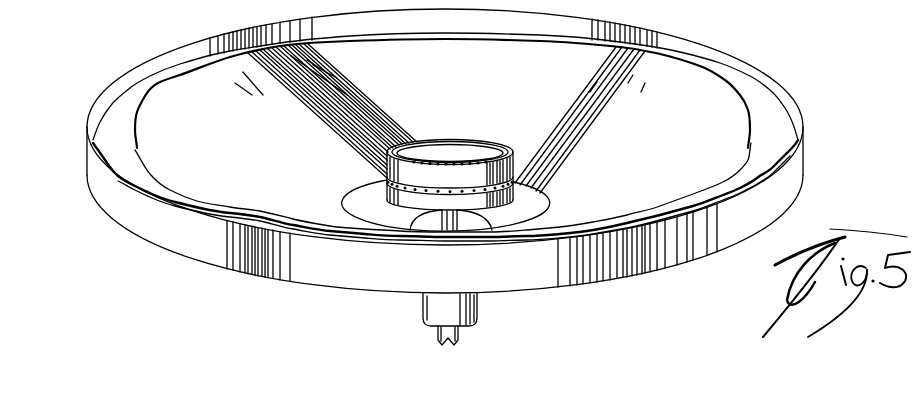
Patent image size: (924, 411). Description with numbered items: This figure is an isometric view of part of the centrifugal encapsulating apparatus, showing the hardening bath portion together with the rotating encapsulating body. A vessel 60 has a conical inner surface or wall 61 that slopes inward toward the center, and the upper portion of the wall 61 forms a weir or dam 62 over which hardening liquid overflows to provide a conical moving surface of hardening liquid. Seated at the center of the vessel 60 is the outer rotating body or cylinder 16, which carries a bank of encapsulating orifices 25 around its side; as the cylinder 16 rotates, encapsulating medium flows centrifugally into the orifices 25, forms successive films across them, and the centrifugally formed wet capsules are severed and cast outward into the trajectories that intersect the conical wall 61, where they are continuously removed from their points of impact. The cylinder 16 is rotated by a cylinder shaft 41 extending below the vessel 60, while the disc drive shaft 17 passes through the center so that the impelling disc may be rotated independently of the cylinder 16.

The vessel 60 is at (797, 86).
The conical inner surface or wall 61 is at (274, 171).
The weir or dam 62 is at (167, 187).
The cylinder 16 is at (476, 139).
The encapsulating orifices 25 is at (486, 188).
The disc drive shaft 17 is at (437, 224).
The cylinder shaft 41 is at (480, 305).